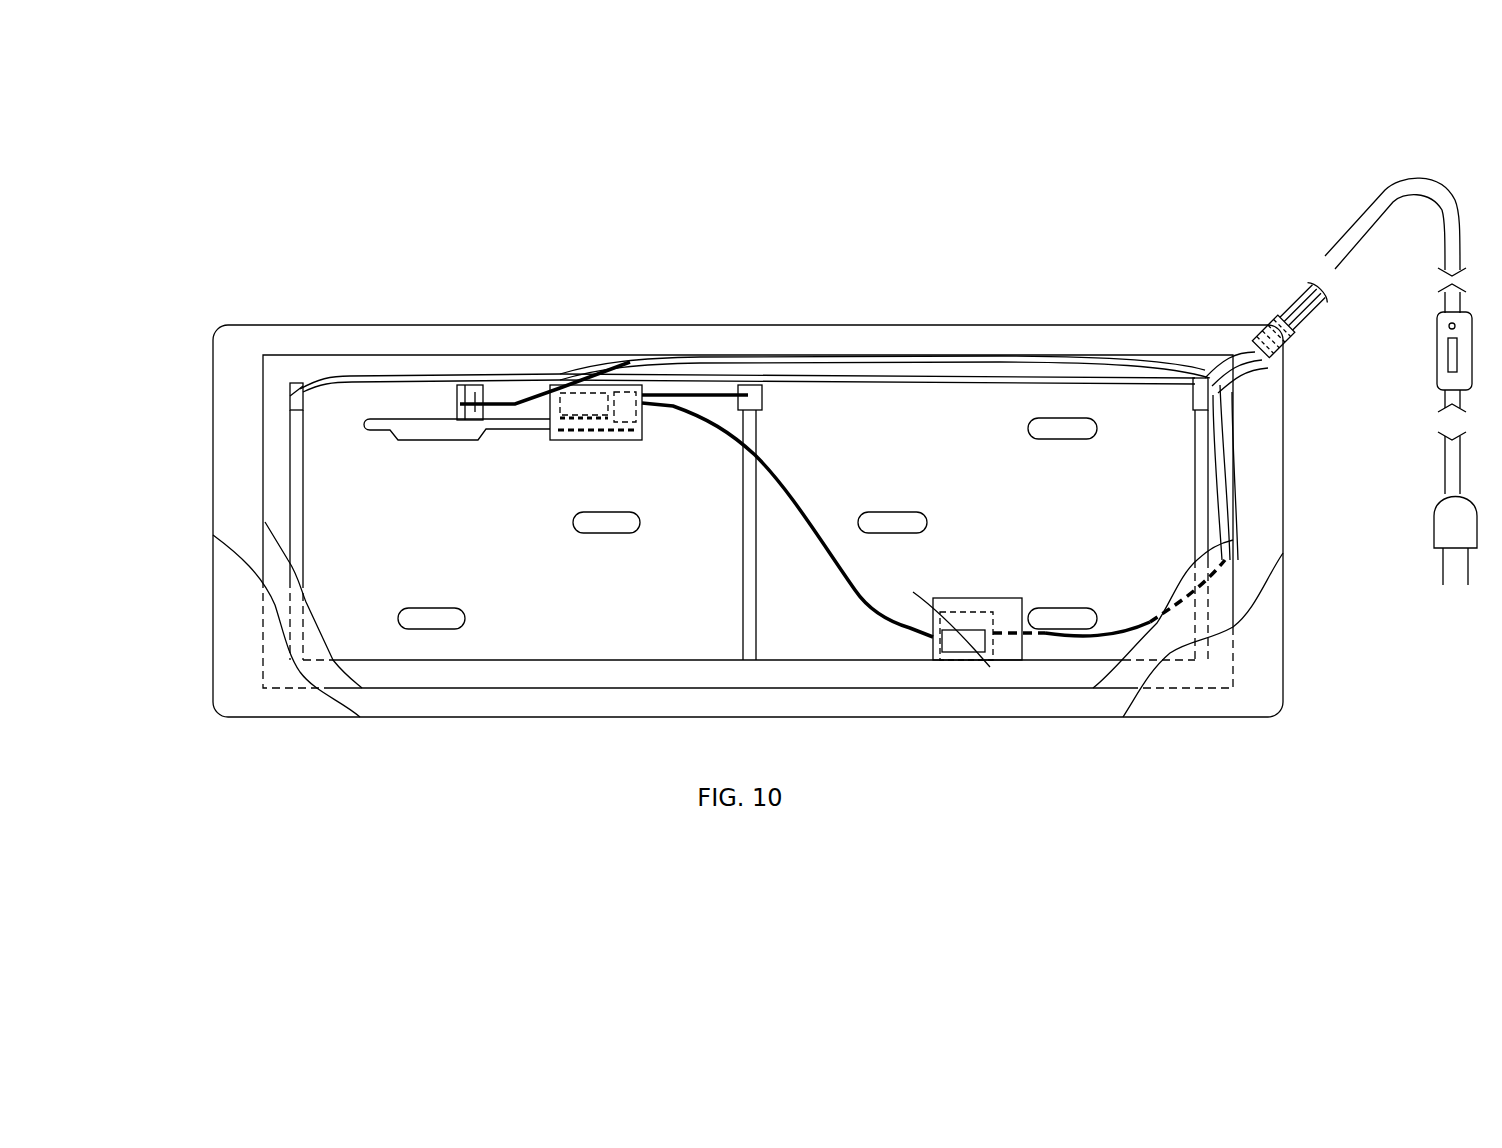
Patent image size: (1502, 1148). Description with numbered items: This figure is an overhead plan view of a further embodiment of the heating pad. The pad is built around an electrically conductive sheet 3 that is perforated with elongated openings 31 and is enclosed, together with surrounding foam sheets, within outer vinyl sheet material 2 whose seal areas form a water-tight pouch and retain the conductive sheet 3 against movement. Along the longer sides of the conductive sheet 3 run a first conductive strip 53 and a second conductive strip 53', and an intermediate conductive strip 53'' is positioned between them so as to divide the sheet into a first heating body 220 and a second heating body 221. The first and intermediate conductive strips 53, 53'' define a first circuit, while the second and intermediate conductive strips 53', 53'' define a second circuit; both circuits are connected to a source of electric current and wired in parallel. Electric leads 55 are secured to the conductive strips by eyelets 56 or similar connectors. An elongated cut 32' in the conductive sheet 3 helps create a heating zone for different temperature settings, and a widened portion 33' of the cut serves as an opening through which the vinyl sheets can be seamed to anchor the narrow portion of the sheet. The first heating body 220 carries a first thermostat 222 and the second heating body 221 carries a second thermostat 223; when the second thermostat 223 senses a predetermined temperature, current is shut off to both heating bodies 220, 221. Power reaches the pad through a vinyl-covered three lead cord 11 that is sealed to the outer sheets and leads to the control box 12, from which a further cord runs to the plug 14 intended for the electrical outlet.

The outer vinyl sheet 2 is at (292, 709).
The electrically conductive sheet 3 is at (272, 568).
The three lead cord 11 is at (1283, 300).
The control box 12 is at (1452, 342).
The plug 14 is at (1458, 565).
The elongated openings 31 is at (900, 507).
The elongated cut 32' is at (842, 462).
The widened portion of elongated cut 33' is at (457, 348).
The first conductive strip 53 is at (1264, 517).
The second conductive strip 53' is at (229, 534).
The intermediate conductive strip 53'' is at (731, 579).
The electric leads 55 is at (421, 367).
The eyelet 56 is at (294, 417).
The first heating body 220 is at (990, 521).
The second heating body 221 is at (505, 521).
The first thermostat 222 is at (958, 643).
The second thermostat 223 is at (579, 397).